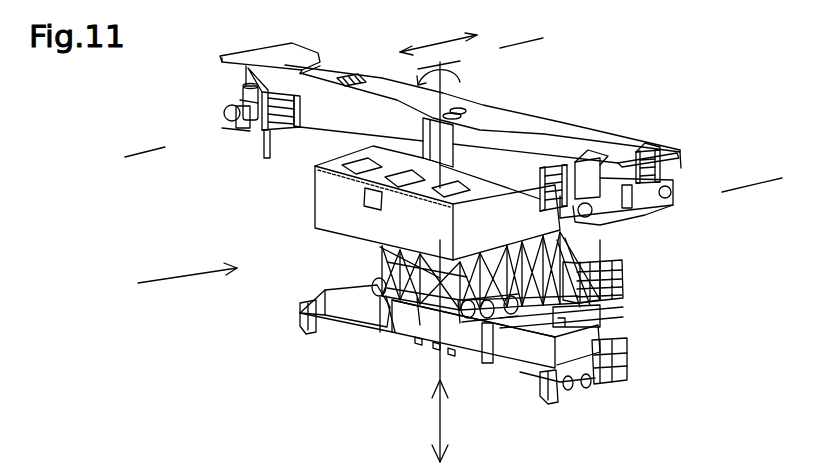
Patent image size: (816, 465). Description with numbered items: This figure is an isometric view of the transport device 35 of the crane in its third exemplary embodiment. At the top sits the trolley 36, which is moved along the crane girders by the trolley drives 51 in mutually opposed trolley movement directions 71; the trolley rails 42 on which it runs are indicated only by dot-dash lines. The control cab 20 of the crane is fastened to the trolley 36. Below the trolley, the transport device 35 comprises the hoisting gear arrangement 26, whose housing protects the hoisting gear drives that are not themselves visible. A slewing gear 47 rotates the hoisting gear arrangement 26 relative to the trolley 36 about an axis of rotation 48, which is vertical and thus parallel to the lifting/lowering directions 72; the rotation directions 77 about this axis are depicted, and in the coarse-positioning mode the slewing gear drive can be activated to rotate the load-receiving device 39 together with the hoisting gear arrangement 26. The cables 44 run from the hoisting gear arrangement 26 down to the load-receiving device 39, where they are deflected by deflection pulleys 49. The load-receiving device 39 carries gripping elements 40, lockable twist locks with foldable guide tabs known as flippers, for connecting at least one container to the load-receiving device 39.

The control cab 20 is at (587, 340).
The hoisting gear arrangement 26 is at (326, 198).
The transport device 35 is at (247, 464).
The trolley 36 is at (523, 153).
The load-receiving device 39 is at (410, 332).
The gripping elements 40 is at (297, 328).
The trolley rails 42 is at (245, 128).
The cables 44 is at (470, 302).
The slewing gear 47 is at (443, 154).
The axis of rotation 48 is at (425, 186).
The deflection pulleys 49 is at (467, 312).
The trolley drives 51 is at (278, 91).
The trolley movement directions 71 is at (437, 46).
The lifting/lowering directions 72 is at (440, 422).
The rotation directions 77 is at (460, 78).